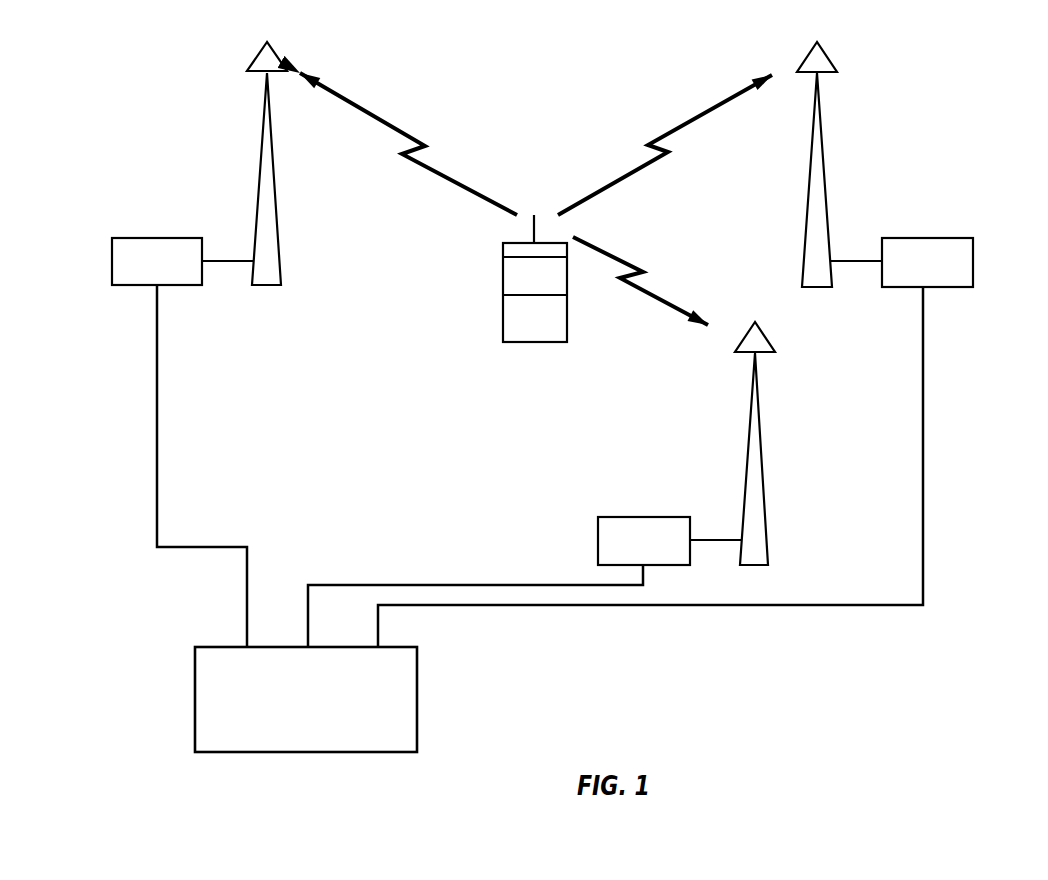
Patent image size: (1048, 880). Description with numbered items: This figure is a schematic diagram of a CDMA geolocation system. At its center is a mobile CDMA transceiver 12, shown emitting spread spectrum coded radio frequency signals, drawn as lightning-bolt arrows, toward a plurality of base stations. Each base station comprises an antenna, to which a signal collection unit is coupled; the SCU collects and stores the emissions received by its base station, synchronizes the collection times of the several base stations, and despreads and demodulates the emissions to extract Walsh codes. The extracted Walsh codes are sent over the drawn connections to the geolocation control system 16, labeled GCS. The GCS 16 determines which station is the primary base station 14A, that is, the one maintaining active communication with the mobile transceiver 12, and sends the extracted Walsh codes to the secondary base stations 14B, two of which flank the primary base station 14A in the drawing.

The mobile CDMA transceiver 12 is at (503, 310).
The primary base station 14A is at (728, 451).
The secondary base station 14B is at (537, 164).
The geolocation control system 16 is at (195, 663).